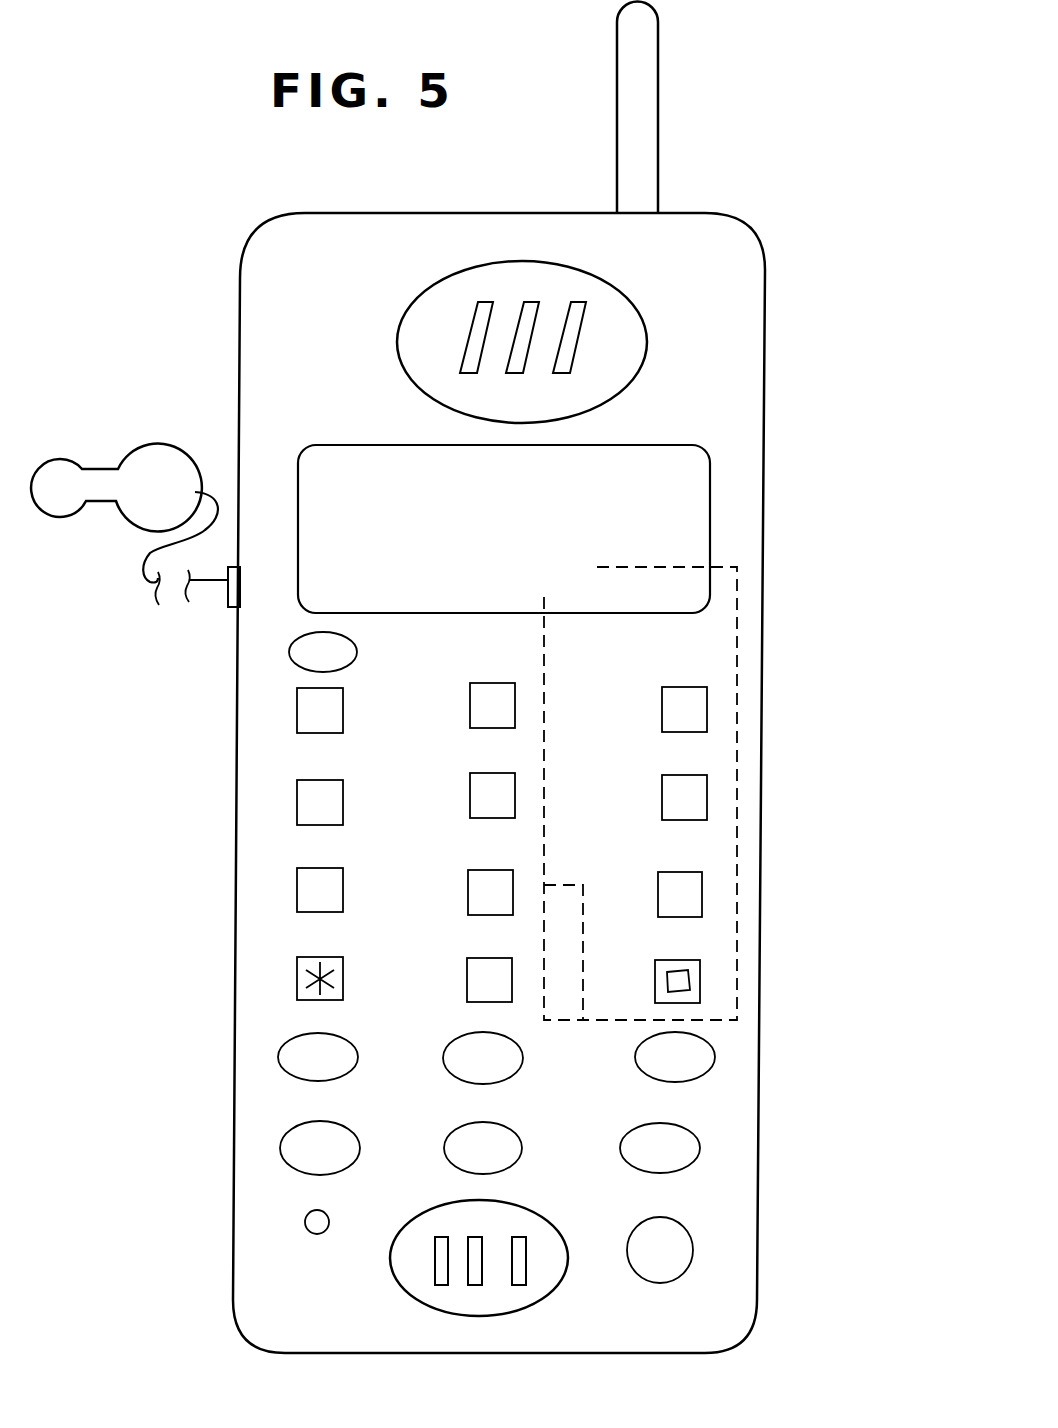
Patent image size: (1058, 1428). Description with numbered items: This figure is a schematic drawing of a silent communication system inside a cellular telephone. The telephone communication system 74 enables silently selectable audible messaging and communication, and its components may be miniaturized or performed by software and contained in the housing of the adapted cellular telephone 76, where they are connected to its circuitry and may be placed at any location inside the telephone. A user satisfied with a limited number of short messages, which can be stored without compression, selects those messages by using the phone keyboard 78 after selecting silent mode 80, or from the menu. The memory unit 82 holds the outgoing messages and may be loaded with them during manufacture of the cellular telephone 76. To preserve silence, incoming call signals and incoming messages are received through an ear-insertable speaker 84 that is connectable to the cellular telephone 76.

The telephone communication system 74 is at (737, 660).
The cellular telephone 76 is at (770, 354).
The phone keyboard 78 is at (297, 908).
The silent mode 80 is at (458, 1072).
The memory unit 82 is at (582, 948).
The ear-insertable speaker 84 is at (142, 473).